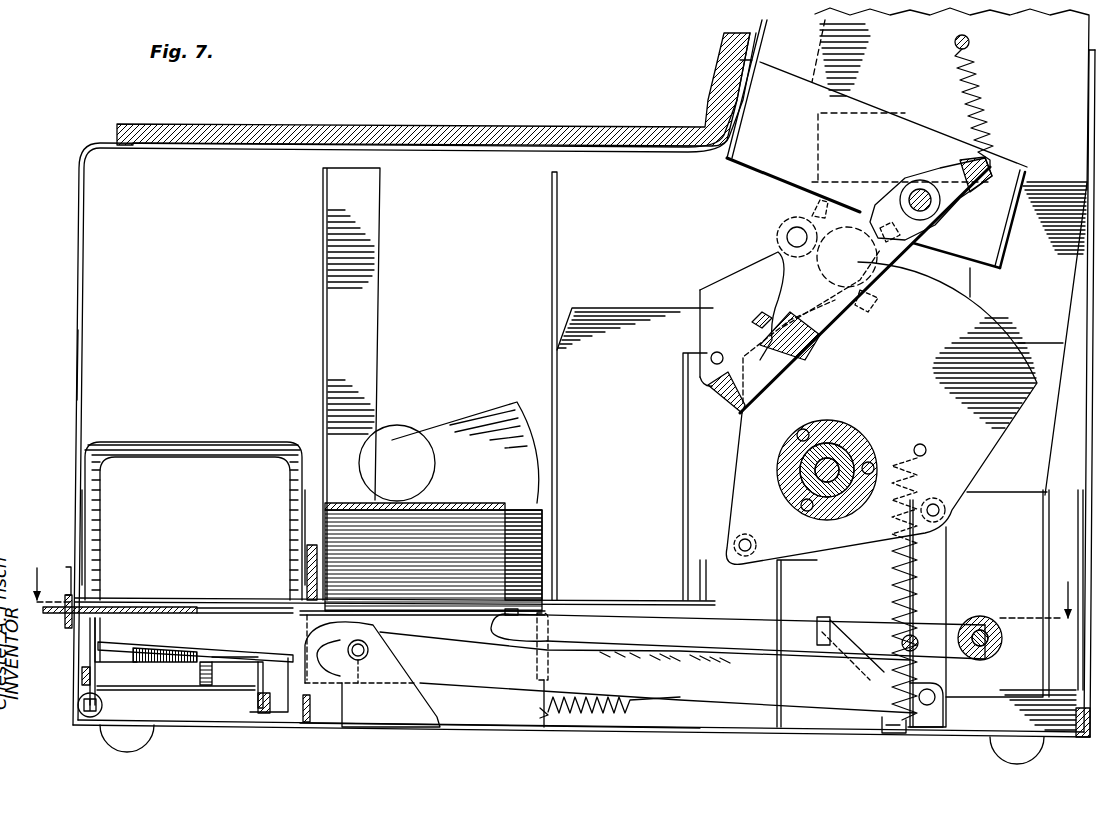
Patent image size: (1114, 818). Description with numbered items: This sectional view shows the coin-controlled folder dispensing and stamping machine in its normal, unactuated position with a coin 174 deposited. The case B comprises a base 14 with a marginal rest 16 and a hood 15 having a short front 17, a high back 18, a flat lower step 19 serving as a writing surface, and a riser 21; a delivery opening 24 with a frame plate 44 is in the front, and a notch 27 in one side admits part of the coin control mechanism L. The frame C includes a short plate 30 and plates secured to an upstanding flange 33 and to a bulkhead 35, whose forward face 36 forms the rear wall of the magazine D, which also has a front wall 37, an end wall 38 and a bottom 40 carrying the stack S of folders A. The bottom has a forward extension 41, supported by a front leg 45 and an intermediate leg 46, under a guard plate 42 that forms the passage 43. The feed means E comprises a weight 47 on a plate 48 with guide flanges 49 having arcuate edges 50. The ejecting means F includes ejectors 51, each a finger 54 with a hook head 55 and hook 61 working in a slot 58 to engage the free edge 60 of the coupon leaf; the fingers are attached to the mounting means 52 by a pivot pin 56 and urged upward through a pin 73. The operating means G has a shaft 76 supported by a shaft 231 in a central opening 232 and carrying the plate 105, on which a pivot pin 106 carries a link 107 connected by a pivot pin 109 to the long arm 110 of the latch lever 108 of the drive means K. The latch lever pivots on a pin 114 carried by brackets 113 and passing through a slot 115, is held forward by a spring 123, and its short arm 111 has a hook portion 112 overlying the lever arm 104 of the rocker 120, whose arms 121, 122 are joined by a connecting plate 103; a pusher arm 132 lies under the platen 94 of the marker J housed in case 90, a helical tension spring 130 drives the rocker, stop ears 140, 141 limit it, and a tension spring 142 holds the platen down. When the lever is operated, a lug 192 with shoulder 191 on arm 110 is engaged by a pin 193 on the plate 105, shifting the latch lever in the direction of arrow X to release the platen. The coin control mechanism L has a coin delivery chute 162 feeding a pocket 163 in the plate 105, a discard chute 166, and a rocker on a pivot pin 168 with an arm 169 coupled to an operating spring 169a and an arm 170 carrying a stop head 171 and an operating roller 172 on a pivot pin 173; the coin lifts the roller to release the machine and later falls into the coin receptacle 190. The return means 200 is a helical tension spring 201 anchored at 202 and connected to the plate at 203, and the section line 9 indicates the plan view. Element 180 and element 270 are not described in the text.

The hood 15 is at (74, 262).
The short vertical front 17 is at (76, 330).
The marginal flange or rest 16 is at (1082, 742).
The high vertical back 18 is at (1089, 405).
The base or bottom 14 is at (303, 740).
The forward lower step 19 is at (420, 124).
The case B is at (522, 123).
The riser 21 is at (726, 68).
The coin control mechanism L is at (908, 45).
The frame C is at (738, 166).
The discard chute 166 is at (901, 290).
The spring anchor 180 is at (970, 42).
The operating spring 169a is at (990, 100).
The arm 169 is at (948, 165).
The pivot pin 168 is at (930, 205).
The coin 174 is at (882, 214).
The coin delivery chute 162 is at (814, 206).
The pivot pin 173 is at (788, 236).
The operating roller 172 is at (786, 253).
The pocket 163 is at (872, 292).
The arm 170 is at (800, 342).
The stop head 171 is at (722, 400).
The plate 105 is at (881, 413).
The pin 193 is at (752, 543).
The pivot pin 106 is at (940, 515).
The spring connection 203 is at (926, 446).
The operating means G is at (818, 440).
The operating shaft 76 is at (800, 462).
The shaft 231 is at (816, 473).
The central opening 232 is at (848, 492).
The return means 200 is at (888, 592).
The helical tension spring 201 is at (893, 606).
The plate 30 is at (825, 637).
The link 107 is at (946, 558).
The lug 192 is at (820, 614).
The shoulder 191 is at (818, 665).
The pin 73 is at (915, 636).
The pivot pin 109 is at (936, 702).
The anchor 202 is at (892, 736).
The notch 27 is at (1050, 500).
The upstanding flange 33 is at (1076, 534).
The pivot pin 56 is at (982, 648).
The mounting means 52 is at (990, 618).
The section line 9- 9 is at (544, 581).
The finger 54 is at (738, 636).
The free edge 60 is at (510, 620).
The hook head 55 is at (533, 620).
The long arm 110 is at (647, 672).
The slot 58 is at (410, 632).
The latch lever 108 is at (505, 694).
The drive means K is at (732, 706).
The arrow X is at (788, 685).
The ejecting means F is at (676, 618).
The ejector 51 is at (708, 616).
The spring 123 is at (585, 724).
The bracket 113 is at (382, 728).
The pivot pin 114 is at (364, 678).
The slot 115 is at (310, 640).
The intermediate leg 46 is at (330, 704).
The bottom 40 is at (450, 616).
The hook 61 is at (517, 611).
The folder A is at (358, 500).
The stack S is at (440, 512).
The plate 48 is at (476, 504).
The section 270 is at (518, 508).
The weight 47 is at (398, 426).
The feed means E is at (452, 410).
The guide flange 49 is at (482, 410).
The arcuate edge 50 is at (522, 406).
The front wall 37 is at (322, 253).
The end wall 38 is at (376, 284).
The magazine D is at (385, 250).
The bulkhead 35 is at (558, 239).
The forward face 36 is at (552, 276).
The coin receptacle 190 is at (688, 474).
The case 90 is at (245, 442).
The marker J is at (186, 440).
The guard plate 42 is at (208, 598).
The passage 43 is at (252, 602).
The delivery opening 24 is at (62, 595).
The frame plate 44 is at (60, 614).
The front leg 45 is at (92, 615).
The hook portion 112 is at (98, 608).
The forward extension 41 is at (156, 614).
The short arm 111 is at (218, 629).
The lever arm 104 is at (104, 634).
The pusher arm 132 is at (140, 662).
The tension spring 142 is at (222, 664).
The platen 94 is at (200, 685).
The lever arm 122 is at (100, 692).
The stop ear 141 is at (72, 680).
The stop ear 140 is at (84, 716).
The helical tension spring 130 is at (92, 720).
The connecting plate 103 is at (245, 676).
The rocker 120 is at (222, 690).
The lever arm 121 is at (257, 707).